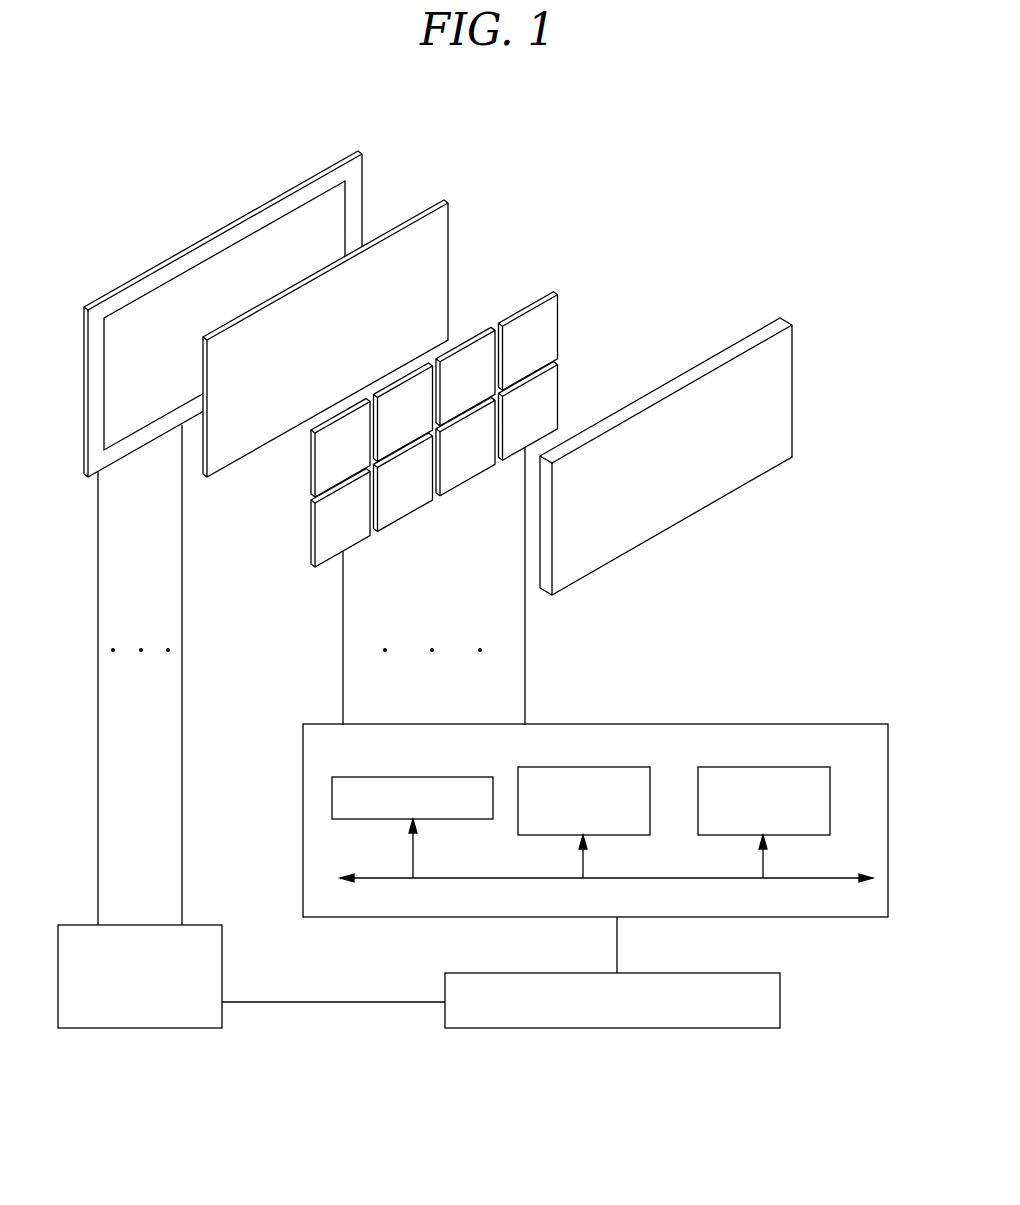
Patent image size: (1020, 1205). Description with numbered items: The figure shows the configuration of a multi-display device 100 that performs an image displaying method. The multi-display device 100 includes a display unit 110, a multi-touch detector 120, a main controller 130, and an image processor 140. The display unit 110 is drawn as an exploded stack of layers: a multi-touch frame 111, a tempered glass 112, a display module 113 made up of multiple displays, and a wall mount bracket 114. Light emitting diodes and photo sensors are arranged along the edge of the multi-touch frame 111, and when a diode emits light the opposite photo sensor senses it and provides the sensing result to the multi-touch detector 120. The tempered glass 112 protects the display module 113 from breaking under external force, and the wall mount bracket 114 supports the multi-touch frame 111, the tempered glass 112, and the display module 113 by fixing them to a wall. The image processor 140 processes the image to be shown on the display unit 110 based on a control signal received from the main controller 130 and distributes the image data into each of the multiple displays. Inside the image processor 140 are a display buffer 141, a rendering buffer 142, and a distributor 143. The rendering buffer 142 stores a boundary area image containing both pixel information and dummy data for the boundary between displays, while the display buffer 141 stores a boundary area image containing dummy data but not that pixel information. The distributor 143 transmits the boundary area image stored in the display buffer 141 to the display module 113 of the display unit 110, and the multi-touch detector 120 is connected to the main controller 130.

The multi-display device 100 is at (835, 582).
The display unit 110 is at (719, 270).
The multi-touch frame 111 is at (352, 207).
The tempered glass 112 is at (453, 238).
The display module 113 is at (545, 325).
The wall mount bracket 114 is at (725, 357).
The multi-touch detector 120 is at (195, 923).
The main controller 130 is at (742, 972).
The image processor 140 is at (792, 722).
The display buffer 141 is at (618, 837).
The rendering buffer 142 is at (790, 837).
The distributor 143 is at (453, 820).